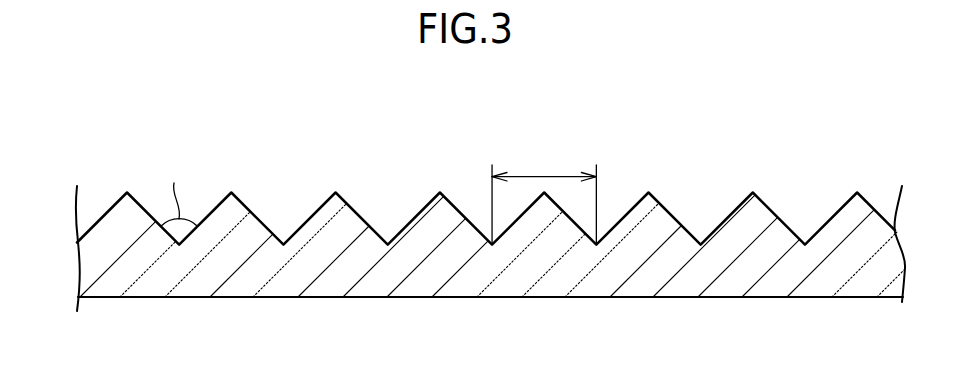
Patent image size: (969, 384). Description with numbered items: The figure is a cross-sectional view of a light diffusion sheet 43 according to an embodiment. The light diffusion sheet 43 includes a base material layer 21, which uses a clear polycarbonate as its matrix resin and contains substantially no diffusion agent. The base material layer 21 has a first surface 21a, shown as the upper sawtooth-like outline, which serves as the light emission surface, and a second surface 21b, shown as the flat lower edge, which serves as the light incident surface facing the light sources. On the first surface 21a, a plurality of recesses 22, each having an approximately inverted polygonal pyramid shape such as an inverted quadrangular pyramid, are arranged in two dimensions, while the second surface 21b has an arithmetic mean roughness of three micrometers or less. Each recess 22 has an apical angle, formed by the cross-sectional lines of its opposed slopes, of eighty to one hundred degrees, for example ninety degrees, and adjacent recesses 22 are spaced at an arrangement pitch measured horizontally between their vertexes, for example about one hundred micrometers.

The base material layer 21 is at (97, 262).
The first surface 21a is at (415, 217).
The second surface 21b is at (632, 298).
The recess 22 is at (385, 215).
The light diffusion sheet 43 is at (772, 168).